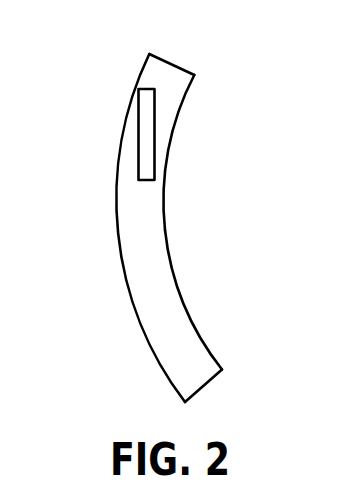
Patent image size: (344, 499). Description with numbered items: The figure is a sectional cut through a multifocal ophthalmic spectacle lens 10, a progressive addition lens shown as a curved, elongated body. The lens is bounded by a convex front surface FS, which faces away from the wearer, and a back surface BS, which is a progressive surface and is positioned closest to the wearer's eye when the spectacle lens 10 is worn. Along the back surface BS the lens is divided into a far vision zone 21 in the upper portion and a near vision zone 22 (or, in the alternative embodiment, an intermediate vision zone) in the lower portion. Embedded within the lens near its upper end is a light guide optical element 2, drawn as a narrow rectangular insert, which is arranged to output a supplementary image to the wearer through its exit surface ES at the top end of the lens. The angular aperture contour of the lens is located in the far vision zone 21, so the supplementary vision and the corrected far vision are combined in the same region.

The multifocal ophthalmic spectacle lens 10 is at (161, 201).
The light guide optical element 2 is at (115, 134).
The far vision zone 21 is at (170, 149).
The near vision zone 22 is at (192, 318).
The exit surface ES is at (154, 100).
The back surface BS is at (220, 365).
The front surface FS is at (143, 338).